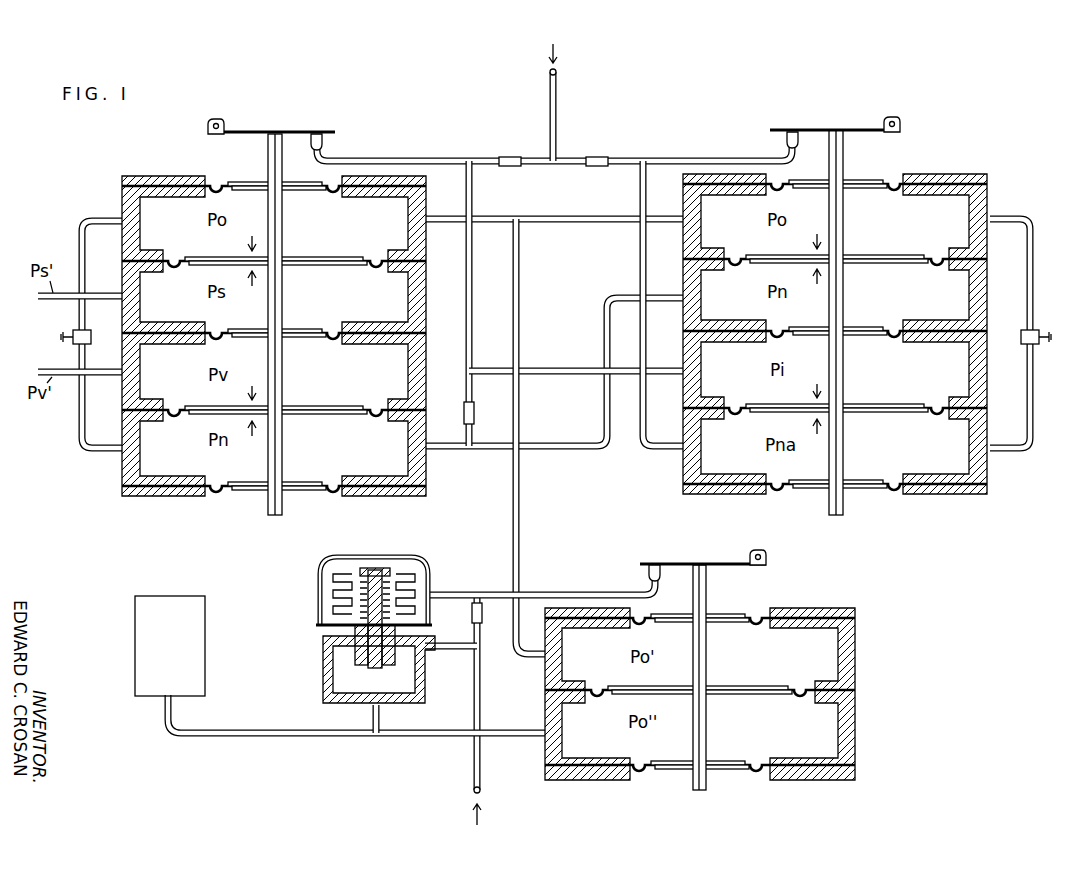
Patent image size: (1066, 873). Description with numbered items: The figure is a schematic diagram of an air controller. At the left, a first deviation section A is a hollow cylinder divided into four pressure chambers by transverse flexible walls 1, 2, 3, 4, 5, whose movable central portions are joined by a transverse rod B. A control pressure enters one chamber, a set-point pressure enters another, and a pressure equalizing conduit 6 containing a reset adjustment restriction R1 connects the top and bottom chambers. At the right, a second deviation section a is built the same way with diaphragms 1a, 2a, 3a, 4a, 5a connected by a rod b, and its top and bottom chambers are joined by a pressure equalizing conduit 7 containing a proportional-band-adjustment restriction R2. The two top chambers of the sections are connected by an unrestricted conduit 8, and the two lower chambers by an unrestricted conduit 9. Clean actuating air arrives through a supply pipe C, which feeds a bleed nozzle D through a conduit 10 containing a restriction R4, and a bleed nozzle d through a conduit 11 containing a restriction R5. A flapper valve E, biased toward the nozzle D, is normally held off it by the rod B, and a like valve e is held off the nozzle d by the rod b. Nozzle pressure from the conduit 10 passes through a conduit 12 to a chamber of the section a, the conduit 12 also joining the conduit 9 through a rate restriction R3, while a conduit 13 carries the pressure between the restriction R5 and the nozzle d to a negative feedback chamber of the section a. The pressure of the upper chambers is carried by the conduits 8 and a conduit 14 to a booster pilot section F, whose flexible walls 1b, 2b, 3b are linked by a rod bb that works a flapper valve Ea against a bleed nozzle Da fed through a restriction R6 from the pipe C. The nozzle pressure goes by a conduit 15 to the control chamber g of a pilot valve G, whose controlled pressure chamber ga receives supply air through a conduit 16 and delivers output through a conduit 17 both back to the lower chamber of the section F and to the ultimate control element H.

The first deviation section A is at (98, 180).
The transverse flexible wall 1 is at (245, 183).
The transverse flexible wall 2 is at (314, 258).
The transverse flexible wall 3 is at (318, 330).
The transverse flexible wall 4 is at (312, 407).
The transverse flexible wall 5 is at (310, 483).
The transverse rod B is at (283, 289).
The valve E is at (288, 131).
The bleed nozzle D is at (324, 142).
The pressure equalizing conduit 6 is at (78, 238).
The pressure equalizing conduit 7 is at (1027, 257).
The unrestricted conduit 8 is at (550, 222).
The unrestricted conduit 9 is at (550, 449).
The conduit 10 is at (438, 158).
The conduit 11 is at (680, 158).
The conduit 12 is at (487, 368).
The conduit 13 is at (642, 258).
The conduit 14 is at (520, 521).
The conduit 15 is at (559, 592).
The conduit 16 is at (450, 650).
The conduit 17 is at (419, 737).
The reset adjustment restriction R1 is at (66, 336).
The proportional-band-adjustment restriction R2 is at (1027, 333).
The rate restriction R3 is at (466, 400).
The restriction R4 is at (508, 156).
The restriction R5 is at (598, 156).
The restriction R6 is at (481, 619).
The supply pipe C is at (549, 80).
The second deviation section a is at (1008, 140).
The transverse flexible wall 1a is at (856, 182).
The transverse flexible wall 2a is at (884, 256).
The transverse flexible wall 3a is at (895, 328).
The transverse flexible wall 4a is at (882, 405).
The transverse flexible wall 5a is at (888, 481).
The transverse rod b is at (844, 290).
The valve e is at (815, 128).
The bleed nozzle d is at (785, 140).
The booster pilot section F is at (893, 637).
The transverse flexible wall 1b is at (728, 613).
The transverse flexible wall 2b is at (742, 695).
The transverse flexible wall 3b is at (736, 770).
The shaft or rod bb is at (707, 650).
The flapper valve Ea is at (668, 562).
The bleed nozzle Da is at (648, 570).
The pilot valve G is at (376, 598).
The control pressure chamber g is at (322, 583).
The controlled air pressure chamber ga is at (338, 681).
The ultimate control element H is at (170, 646).